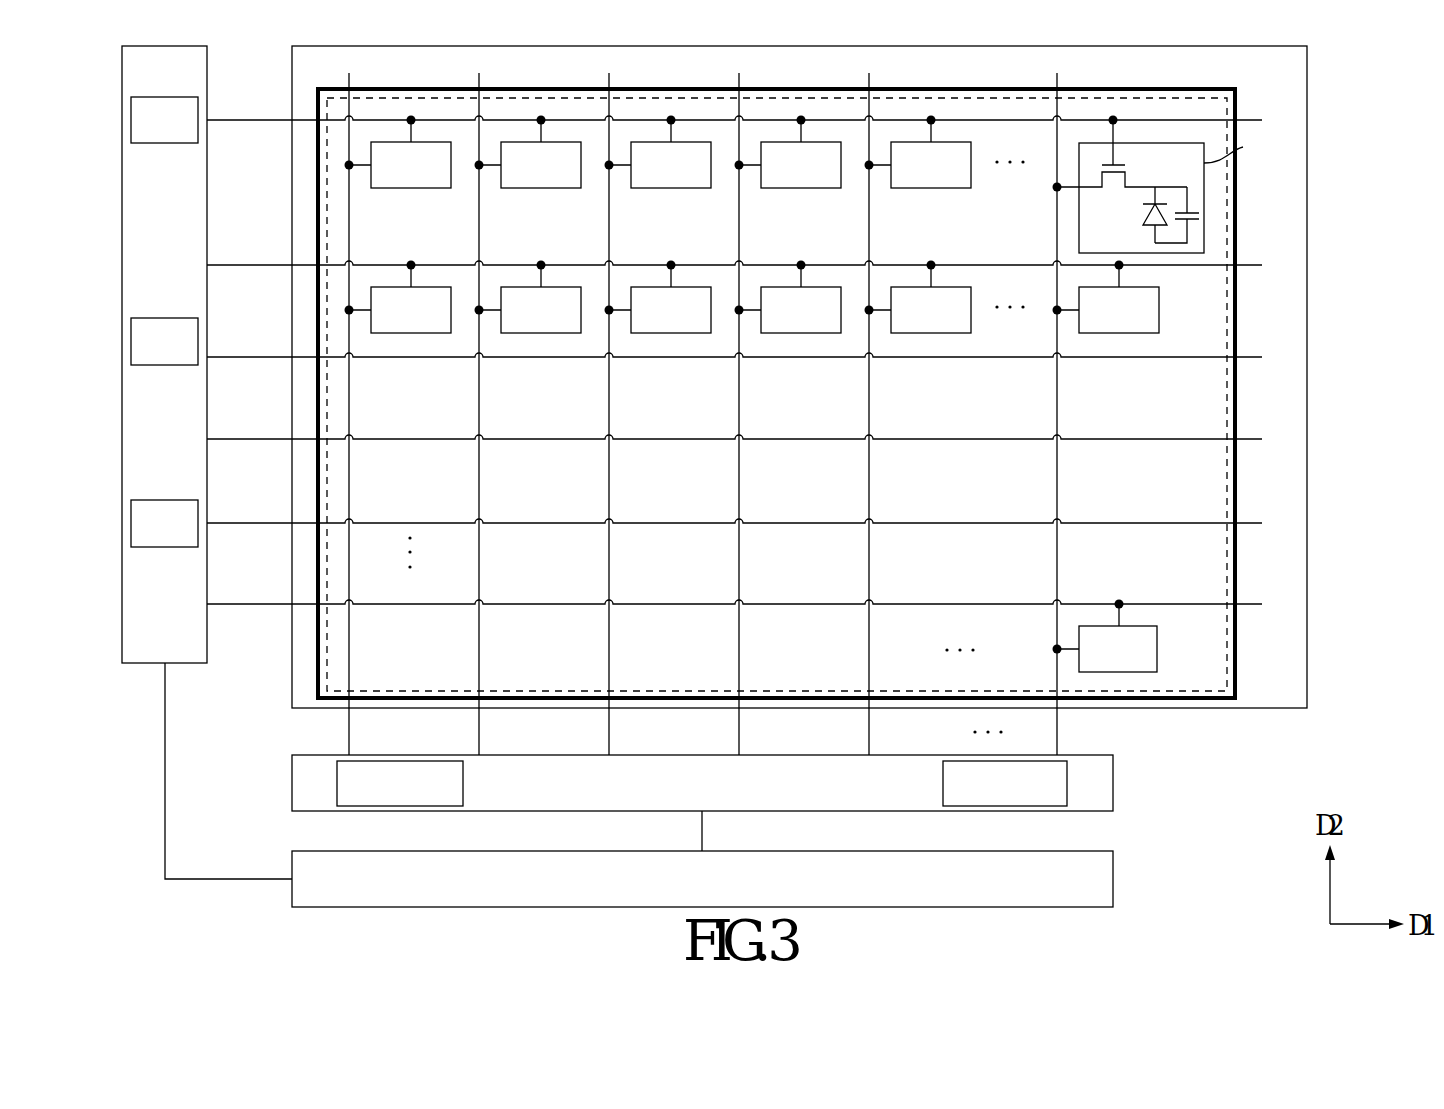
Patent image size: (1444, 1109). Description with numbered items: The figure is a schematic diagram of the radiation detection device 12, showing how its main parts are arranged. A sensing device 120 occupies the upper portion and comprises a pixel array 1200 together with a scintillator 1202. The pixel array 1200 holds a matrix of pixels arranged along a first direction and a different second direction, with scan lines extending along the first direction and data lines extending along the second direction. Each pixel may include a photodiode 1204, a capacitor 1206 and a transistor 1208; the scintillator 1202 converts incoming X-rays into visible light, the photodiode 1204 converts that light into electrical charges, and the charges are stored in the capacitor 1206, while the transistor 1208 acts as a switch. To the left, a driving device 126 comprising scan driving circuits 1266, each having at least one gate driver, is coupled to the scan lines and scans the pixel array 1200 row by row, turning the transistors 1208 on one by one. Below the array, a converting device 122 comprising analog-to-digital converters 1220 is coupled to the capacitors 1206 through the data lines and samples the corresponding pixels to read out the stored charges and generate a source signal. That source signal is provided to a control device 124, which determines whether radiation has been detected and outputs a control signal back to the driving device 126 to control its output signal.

The radiation detection device 12 is at (1323, 90).
The sensing device 120 is at (1308, 377).
The pixel array 1200 is at (1227, 322).
The scintillator 1202 is at (1270, 405).
The photodiode 1204 is at (1142, 211).
The capacitor 1206 is at (1199, 210).
The transistor 1208 is at (1099, 184).
The converting device 122 is at (1113, 780).
The analog-to-digital converter 1220 is at (427, 798).
The control device 124 is at (1113, 876).
The driving device 126 is at (122, 353).
The scan driving circuit 1266 is at (193, 136).